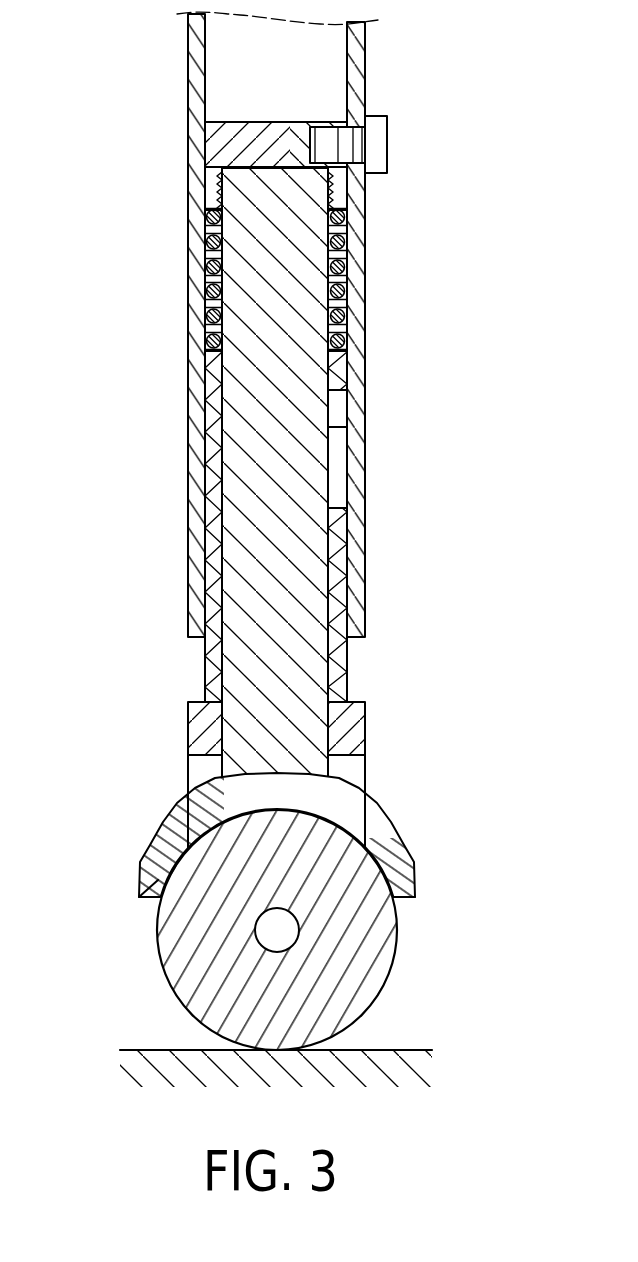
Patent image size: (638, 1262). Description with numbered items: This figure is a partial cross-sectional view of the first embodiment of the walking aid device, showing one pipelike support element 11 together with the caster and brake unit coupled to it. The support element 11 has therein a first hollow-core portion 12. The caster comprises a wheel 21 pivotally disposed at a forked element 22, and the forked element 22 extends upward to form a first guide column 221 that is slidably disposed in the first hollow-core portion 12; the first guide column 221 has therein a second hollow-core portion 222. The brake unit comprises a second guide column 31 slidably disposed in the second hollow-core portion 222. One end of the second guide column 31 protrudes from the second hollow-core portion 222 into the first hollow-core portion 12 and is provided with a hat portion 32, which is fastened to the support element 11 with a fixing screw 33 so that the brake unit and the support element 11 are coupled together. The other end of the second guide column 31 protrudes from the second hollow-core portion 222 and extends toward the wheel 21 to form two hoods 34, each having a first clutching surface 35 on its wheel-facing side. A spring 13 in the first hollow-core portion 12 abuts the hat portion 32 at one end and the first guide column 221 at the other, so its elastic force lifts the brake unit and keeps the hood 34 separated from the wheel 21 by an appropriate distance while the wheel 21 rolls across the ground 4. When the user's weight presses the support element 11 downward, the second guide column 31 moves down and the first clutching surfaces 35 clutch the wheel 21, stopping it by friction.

The support element 11 is at (357, 72).
The first hollow-core portion 12 is at (217, 79).
The spring 13 is at (348, 240).
The wheel 21 is at (387, 957).
The forked element 22 is at (360, 742).
The first guide column 221 is at (340, 578).
The second hollow-core portion 222 is at (234, 598).
The second guide column 31 is at (233, 442).
The hat portion 32 is at (212, 150).
The fixing screw 33 is at (383, 143).
The hood 34 is at (163, 817).
The first clutching surface 35 is at (158, 893).
The ground 4 is at (150, 1048).